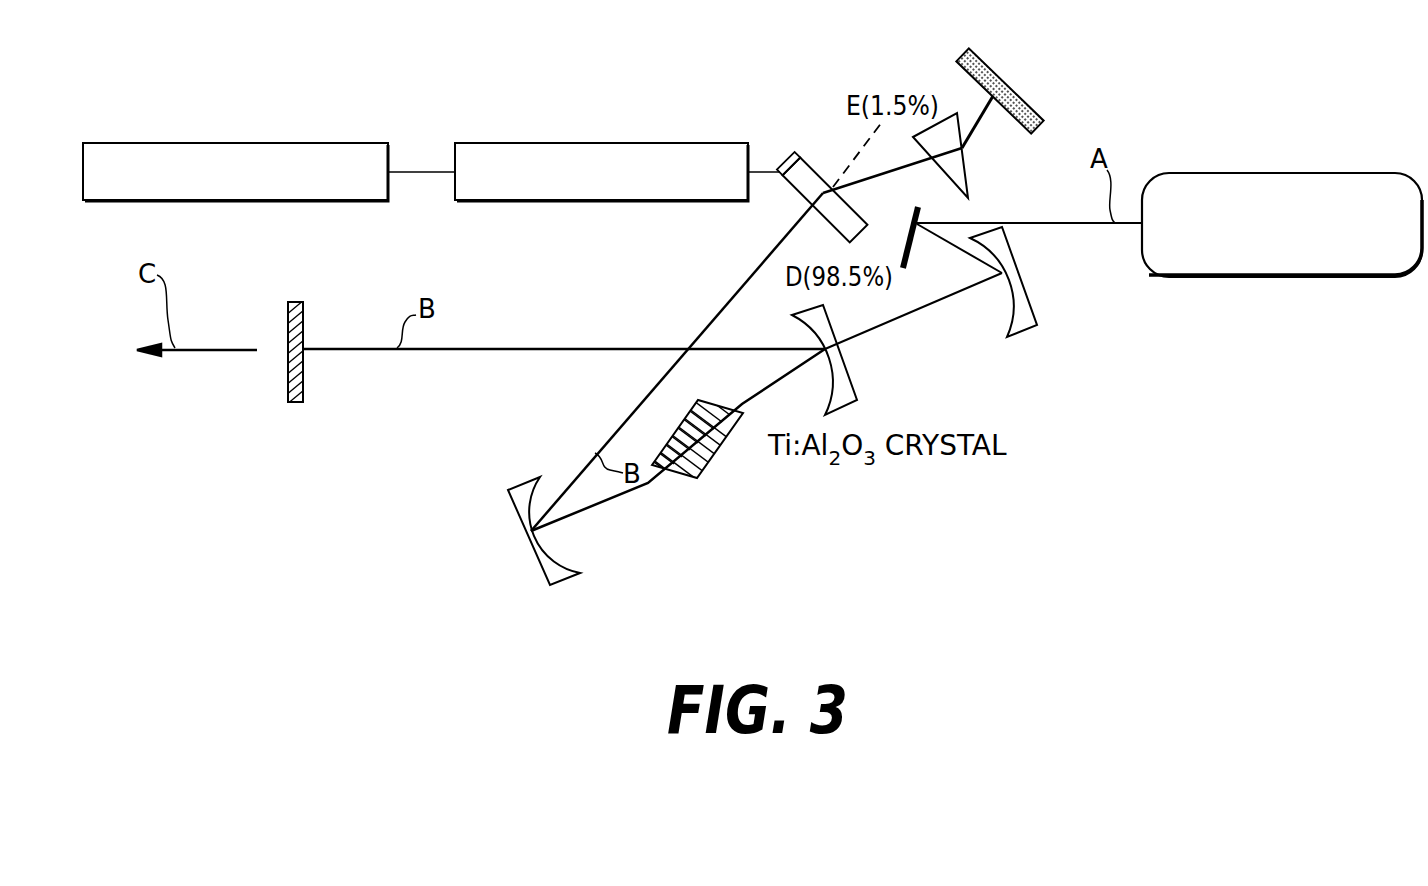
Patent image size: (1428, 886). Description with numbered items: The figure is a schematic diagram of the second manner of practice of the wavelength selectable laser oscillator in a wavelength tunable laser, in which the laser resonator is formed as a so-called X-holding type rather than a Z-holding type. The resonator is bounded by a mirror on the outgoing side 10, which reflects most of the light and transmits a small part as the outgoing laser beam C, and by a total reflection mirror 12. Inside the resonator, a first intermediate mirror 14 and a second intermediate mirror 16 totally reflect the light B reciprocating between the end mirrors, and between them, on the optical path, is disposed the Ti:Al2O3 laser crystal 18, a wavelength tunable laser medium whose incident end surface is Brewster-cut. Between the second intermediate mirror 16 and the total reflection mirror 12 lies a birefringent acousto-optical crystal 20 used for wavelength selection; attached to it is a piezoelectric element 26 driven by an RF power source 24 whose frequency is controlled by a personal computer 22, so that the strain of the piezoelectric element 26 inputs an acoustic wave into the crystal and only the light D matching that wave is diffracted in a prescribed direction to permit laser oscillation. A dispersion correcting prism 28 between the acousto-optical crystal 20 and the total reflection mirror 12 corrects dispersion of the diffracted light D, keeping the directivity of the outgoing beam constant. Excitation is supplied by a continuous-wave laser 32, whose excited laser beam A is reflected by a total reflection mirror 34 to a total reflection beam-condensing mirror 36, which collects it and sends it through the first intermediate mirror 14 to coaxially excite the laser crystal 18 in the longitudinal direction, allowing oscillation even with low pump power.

The mirror on the outgoing side 10 is at (292, 402).
The total reflection mirror 12 is at (988, 63).
The first intermediate mirror 14 is at (855, 395).
The second intermediate mirror 16 is at (523, 530).
The Ti:Al2O3 laser crystal 18 is at (695, 478).
The acousto-optical crystal 20 is at (830, 233).
The personal computer 22 is at (275, 143).
The RF power source 24 is at (485, 143).
The piezoelectric element 26 is at (786, 156).
The dispersion correcting prism 28 is at (965, 162).
The continuous-wave laser 32 is at (1277, 262).
The total reflection mirror 34 is at (903, 268).
The total reflection beam-condensing mirror 36 is at (1037, 318).